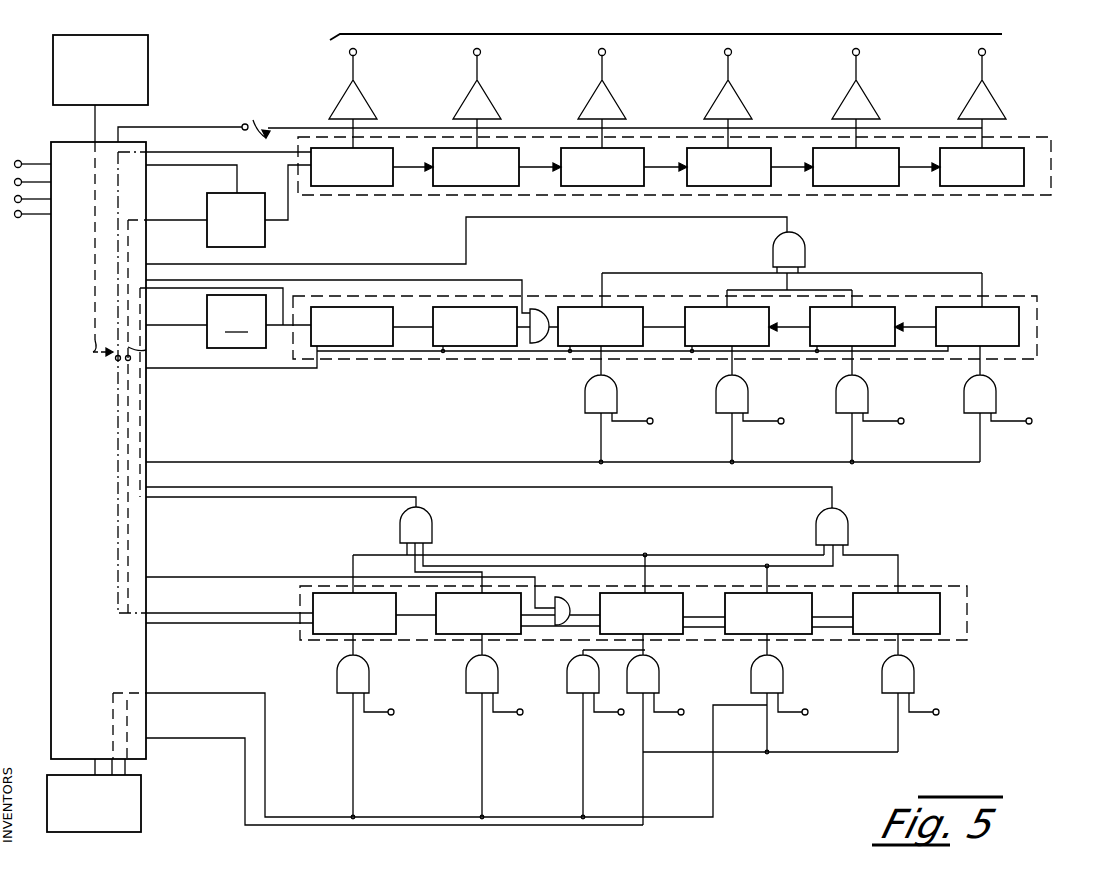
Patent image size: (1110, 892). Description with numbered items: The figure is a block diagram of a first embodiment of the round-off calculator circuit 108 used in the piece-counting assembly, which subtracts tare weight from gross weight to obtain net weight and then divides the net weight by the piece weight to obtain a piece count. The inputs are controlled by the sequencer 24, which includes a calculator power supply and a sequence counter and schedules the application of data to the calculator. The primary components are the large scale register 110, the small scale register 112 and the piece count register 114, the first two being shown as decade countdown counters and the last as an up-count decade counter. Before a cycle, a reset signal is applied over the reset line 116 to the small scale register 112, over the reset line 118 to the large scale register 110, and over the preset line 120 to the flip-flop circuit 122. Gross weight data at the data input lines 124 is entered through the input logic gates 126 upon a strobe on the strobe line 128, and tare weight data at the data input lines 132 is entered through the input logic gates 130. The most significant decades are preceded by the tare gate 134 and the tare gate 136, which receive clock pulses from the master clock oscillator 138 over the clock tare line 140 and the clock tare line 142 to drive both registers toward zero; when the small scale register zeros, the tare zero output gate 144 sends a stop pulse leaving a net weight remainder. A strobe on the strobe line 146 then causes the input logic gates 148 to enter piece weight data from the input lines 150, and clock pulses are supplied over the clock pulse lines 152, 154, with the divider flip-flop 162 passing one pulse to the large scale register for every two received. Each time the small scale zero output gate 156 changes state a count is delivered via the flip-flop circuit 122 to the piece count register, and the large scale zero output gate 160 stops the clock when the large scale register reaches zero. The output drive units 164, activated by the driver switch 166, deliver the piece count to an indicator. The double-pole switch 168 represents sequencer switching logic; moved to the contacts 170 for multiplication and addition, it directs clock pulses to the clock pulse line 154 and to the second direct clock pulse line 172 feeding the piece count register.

The sequencer 24 is at (58, 385).
The round-off calculator circuit 108 is at (222, 790).
The large scale register 110 is at (1037, 330).
The small scale register 112 is at (967, 612).
The piece count register 114 is at (1017, 195).
The reset line 116 is at (218, 627).
The reset line 118 is at (207, 370).
The preset line 120 is at (158, 168).
The flip-flop circuit 122 is at (266, 239).
The data input lines 124 is at (634, 426).
The input logic gates 126 is at (612, 397).
The strobe line 128 is at (335, 462).
The input logic gates 130 is at (657, 676).
The data input lines 132 is at (664, 718).
The tare gate 134 is at (541, 306).
The tare gate 136 is at (566, 600).
The master clock oscillator 138 is at (106, 47).
The clock tare line 140 is at (370, 264).
The clock tare line 142 is at (243, 577).
The tare zero output gate 144 is at (849, 534).
The strobe line 146 is at (266, 722).
The input logic gates 148 is at (366, 676).
The input lines 150 is at (386, 718).
The clock pulse line 152 is at (178, 324).
The clock pulse line 154 is at (178, 613).
The small scale zero output gate 156 is at (434, 530).
The large scale zero output gate 160 is at (798, 252).
The divider flip-flop 162 is at (228, 318).
The output drive units 164 is at (365, 98).
The driver switch 166 is at (264, 124).
The double-pole switch 168 is at (112, 346).
The contacts 170 is at (148, 352).
The second direct clock pulse line 172 is at (186, 148).